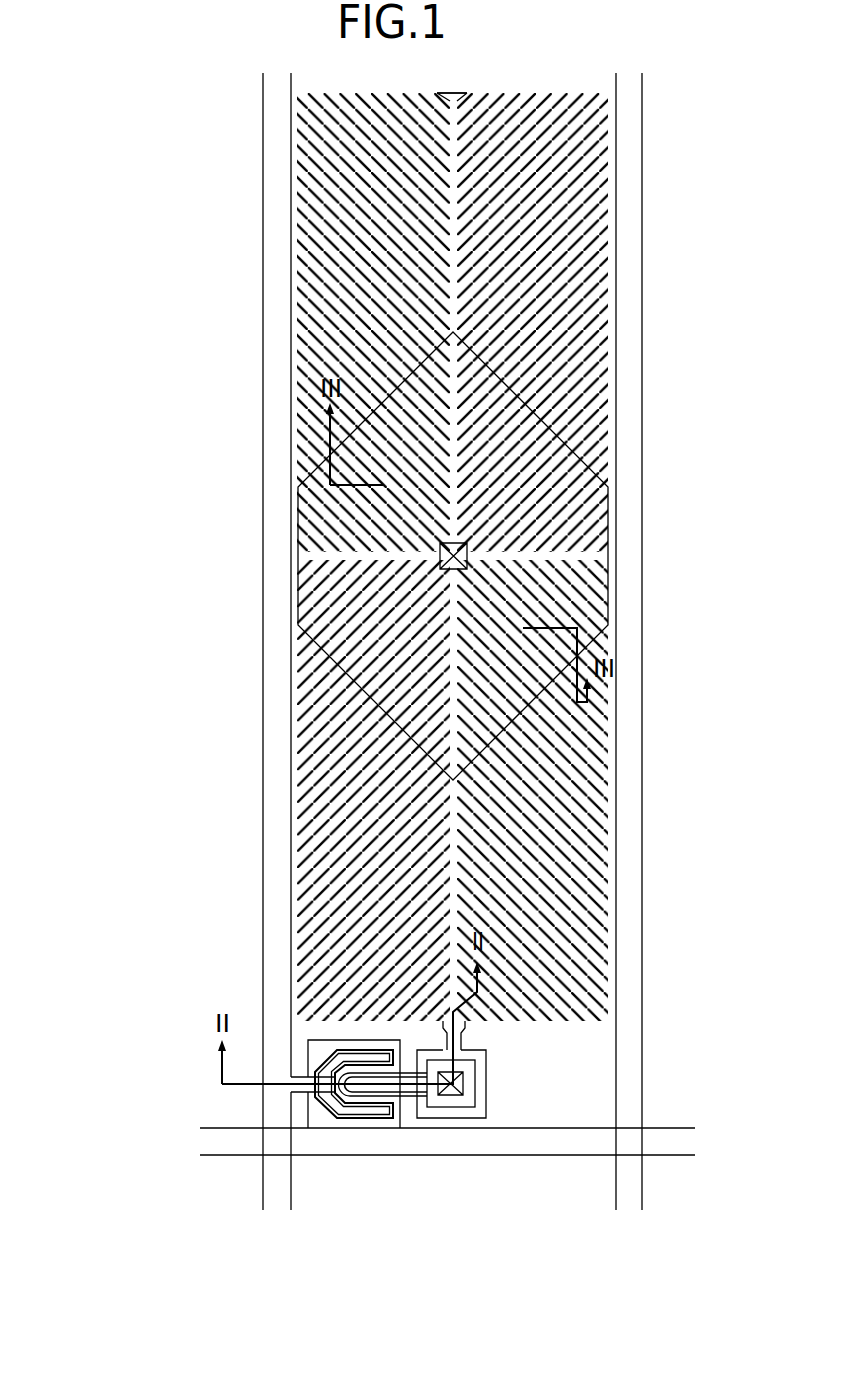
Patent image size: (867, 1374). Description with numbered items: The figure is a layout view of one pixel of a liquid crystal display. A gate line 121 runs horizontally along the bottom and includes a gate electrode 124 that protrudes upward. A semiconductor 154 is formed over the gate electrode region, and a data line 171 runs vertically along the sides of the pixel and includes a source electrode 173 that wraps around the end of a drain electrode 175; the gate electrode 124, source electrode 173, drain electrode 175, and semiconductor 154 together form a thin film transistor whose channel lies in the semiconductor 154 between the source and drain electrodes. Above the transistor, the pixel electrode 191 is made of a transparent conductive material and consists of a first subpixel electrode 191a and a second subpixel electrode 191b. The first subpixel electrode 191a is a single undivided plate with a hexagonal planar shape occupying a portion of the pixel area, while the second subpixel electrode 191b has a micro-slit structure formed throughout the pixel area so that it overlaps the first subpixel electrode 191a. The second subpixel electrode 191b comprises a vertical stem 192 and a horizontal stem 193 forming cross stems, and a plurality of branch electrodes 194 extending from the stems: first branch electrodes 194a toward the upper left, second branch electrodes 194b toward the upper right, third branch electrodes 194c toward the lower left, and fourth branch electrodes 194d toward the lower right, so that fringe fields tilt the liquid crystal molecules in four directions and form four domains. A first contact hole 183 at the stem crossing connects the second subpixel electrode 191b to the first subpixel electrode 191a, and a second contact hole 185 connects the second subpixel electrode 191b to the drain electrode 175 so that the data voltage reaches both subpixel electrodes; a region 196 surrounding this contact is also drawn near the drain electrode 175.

The gate line 121 is at (545, 1157).
The gate electrode 124 is at (308, 1110).
The semiconductor 154 is at (398, 1096).
The data line 171 is at (263, 99).
The source electrode 173 is at (353, 1118).
The drain electrode 175 is at (410, 1092).
The first contact hole 183 is at (467, 557).
The second contact hole 185 is at (450, 1097).
The pixel electrode 191 is at (197, 412).
The first subpixel electrode 191a is at (327, 681).
The second subpixel electrode 191b is at (547, 978).
The vertical stem 192 is at (465, 297).
The horizontal stem 193 is at (570, 537).
The branch electrodes 194 is at (73, 552).
The first branch electrodes 194a is at (355, 148).
The second branch electrodes 194b is at (568, 123).
The third branch electrodes 194c is at (332, 767).
The fourth branch electrodes 194d is at (575, 768).
The drain electrode expansion 196 is at (487, 1083).